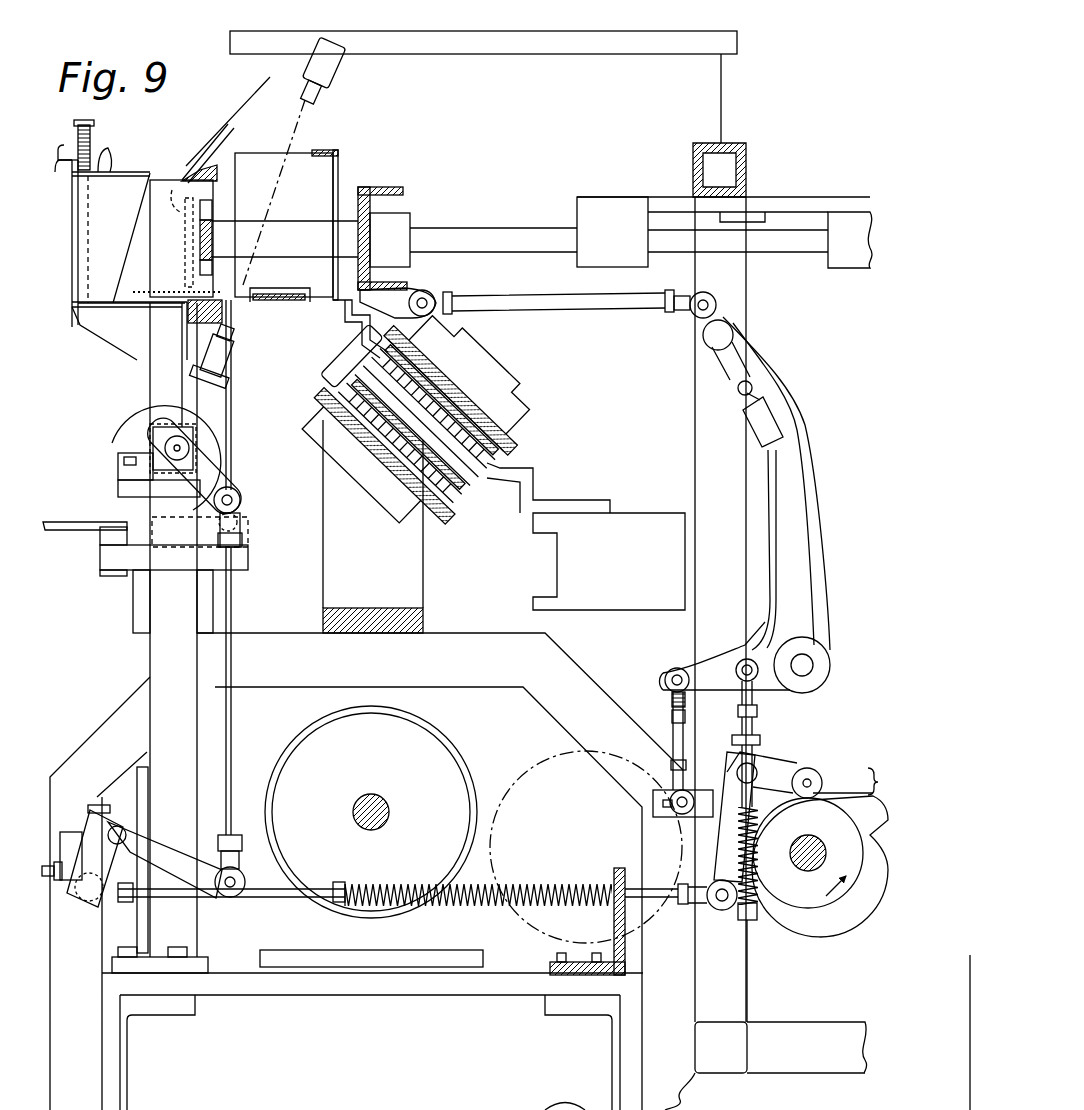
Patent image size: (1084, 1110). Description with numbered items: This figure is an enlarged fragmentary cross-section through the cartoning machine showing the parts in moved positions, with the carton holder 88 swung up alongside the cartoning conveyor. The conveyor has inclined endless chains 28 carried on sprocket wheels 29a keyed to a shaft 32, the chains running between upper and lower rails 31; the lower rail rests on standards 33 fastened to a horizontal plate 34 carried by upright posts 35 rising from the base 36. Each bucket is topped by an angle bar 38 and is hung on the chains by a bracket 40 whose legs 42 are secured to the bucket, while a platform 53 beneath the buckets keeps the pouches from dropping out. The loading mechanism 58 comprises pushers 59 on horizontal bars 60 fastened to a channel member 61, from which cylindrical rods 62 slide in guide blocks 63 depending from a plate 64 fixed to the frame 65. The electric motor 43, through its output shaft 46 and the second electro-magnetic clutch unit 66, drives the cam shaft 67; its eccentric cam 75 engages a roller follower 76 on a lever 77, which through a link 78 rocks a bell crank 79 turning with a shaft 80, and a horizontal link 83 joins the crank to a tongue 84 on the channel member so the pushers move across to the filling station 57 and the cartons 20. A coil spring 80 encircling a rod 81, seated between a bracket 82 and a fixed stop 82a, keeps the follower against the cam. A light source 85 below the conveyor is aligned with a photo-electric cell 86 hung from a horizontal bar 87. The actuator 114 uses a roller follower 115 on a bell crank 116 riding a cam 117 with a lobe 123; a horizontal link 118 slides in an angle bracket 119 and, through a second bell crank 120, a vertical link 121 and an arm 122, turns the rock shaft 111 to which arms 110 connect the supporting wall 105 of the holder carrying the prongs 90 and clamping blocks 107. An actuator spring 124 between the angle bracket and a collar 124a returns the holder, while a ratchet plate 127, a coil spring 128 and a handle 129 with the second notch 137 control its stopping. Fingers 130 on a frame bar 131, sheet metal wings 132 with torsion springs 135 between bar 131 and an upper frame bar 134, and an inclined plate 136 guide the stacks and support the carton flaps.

The display carton 20 is at (136, 173).
The endless chains 28 is at (345, 363).
The sprocket wheels 29a is at (476, 443).
The rails 31 is at (512, 445).
The shaft 32 is at (505, 355).
The standards 33 is at (413, 577).
The horizontal plate 34 is at (420, 616).
The upright posts 35 is at (503, 633).
The base 36 is at (262, 990).
The angle bar 38 is at (333, 150).
The bracket 40 is at (345, 325).
The legs 42 is at (580, 511).
The electric motor 43 is at (297, 755).
The output shaft 46 is at (355, 805).
The platform 53 is at (282, 299).
The filling station 57 is at (163, 141).
The loading mechanism 58 is at (562, 188).
The pushers 59 is at (178, 216).
The horizontal bars 60 is at (295, 226).
The channel member 61 is at (378, 186).
The cylindrical rods 62 is at (474, 229).
The guide blocks 63 is at (577, 260).
The plate 64 is at (802, 197).
The frame 65 is at (693, 425).
The second electro-magnetic clutch unit 66 is at (530, 771).
The cam shaft 67 is at (808, 871).
The eccentric cam 75 is at (840, 930).
The roller follower 76 is at (810, 768).
The lever 77 is at (855, 790).
The link 78 is at (672, 720).
The bell crank 79 is at (803, 495).
The shaft / coil spring 80 is at (815, 666).
The rod 81 is at (757, 712).
The bracket 82 is at (762, 740).
The fixed stop 82a is at (742, 918).
The horizontal link 83 is at (588, 312).
The tongue 84 is at (430, 285).
The light source 85 is at (238, 362).
The photo-electric cell 86 is at (310, 64).
The horizontal bar 87 is at (528, 40).
The carton holder 88 is at (78, 332).
The prongs 90 is at (68, 145).
The supporting wall 105 is at (128, 307).
The clamping block 107 is at (119, 146).
The arms 110 is at (160, 386).
The rock shaft 111 is at (160, 417).
The actuator 114 is at (315, 886).
The roller follower 115 is at (806, 798).
The bell crank 116 is at (716, 855).
The cam 117 is at (838, 910).
The horizontal link 118 is at (262, 898).
The angle bracket 119 is at (612, 928).
The second bell crank 120 is at (165, 845).
The vertical link 121 is at (255, 590).
The arm 122 is at (252, 478).
The lobe 123 is at (849, 781).
The actuator spring 124 is at (482, 907).
The collar 124a is at (342, 905).
The ratchet plate 127 is at (115, 468).
The coil spring 128 is at (100, 535).
The handle 129 is at (75, 511).
The fingers 130 is at (175, 292).
The frame bar 131 is at (222, 310).
The sheet metal wings 132 is at (160, 225).
The frame bar 134 is at (215, 168).
The torsion spring 135 is at (222, 232).
The inclined plate 136 is at (244, 129).
The second notch 137 is at (108, 441).